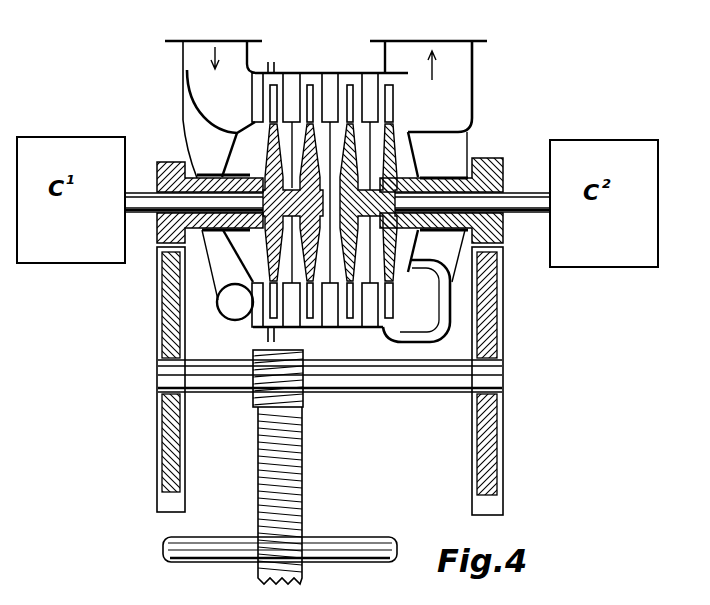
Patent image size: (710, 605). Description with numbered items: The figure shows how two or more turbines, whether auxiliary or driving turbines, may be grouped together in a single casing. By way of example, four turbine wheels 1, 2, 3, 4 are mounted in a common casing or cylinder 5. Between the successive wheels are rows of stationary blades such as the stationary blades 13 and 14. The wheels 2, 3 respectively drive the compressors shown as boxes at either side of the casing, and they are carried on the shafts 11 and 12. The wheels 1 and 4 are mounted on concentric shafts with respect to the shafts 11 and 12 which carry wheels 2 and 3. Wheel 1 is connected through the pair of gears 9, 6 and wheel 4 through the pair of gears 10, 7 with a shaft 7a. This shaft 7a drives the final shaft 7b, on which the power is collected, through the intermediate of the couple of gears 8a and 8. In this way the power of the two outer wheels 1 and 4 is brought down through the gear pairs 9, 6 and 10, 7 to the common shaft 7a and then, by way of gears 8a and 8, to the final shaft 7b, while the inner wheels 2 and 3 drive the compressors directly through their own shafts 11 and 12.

The turbine wheel 1 is at (273, 90).
The turbine wheel 2 is at (310, 90).
The turbine wheel 3 is at (350, 90).
The turbine wheel 4 is at (390, 90).
The common casing or cylinder 5 is at (484, 41).
The gear 6 is at (168, 327).
The gear 7 is at (492, 330).
The shaft 7a is at (410, 390).
The final shaft 7b is at (330, 545).
The gear 8 is at (293, 469).
The gear 8a is at (301, 405).
The gear 9 is at (172, 170).
The gear 10 is at (494, 162).
The shaft 11 is at (147, 211).
The shaft 12 is at (528, 205).
The row of stationary blades 13 is at (258, 313).
The row of stationary blades 14 is at (293, 316).